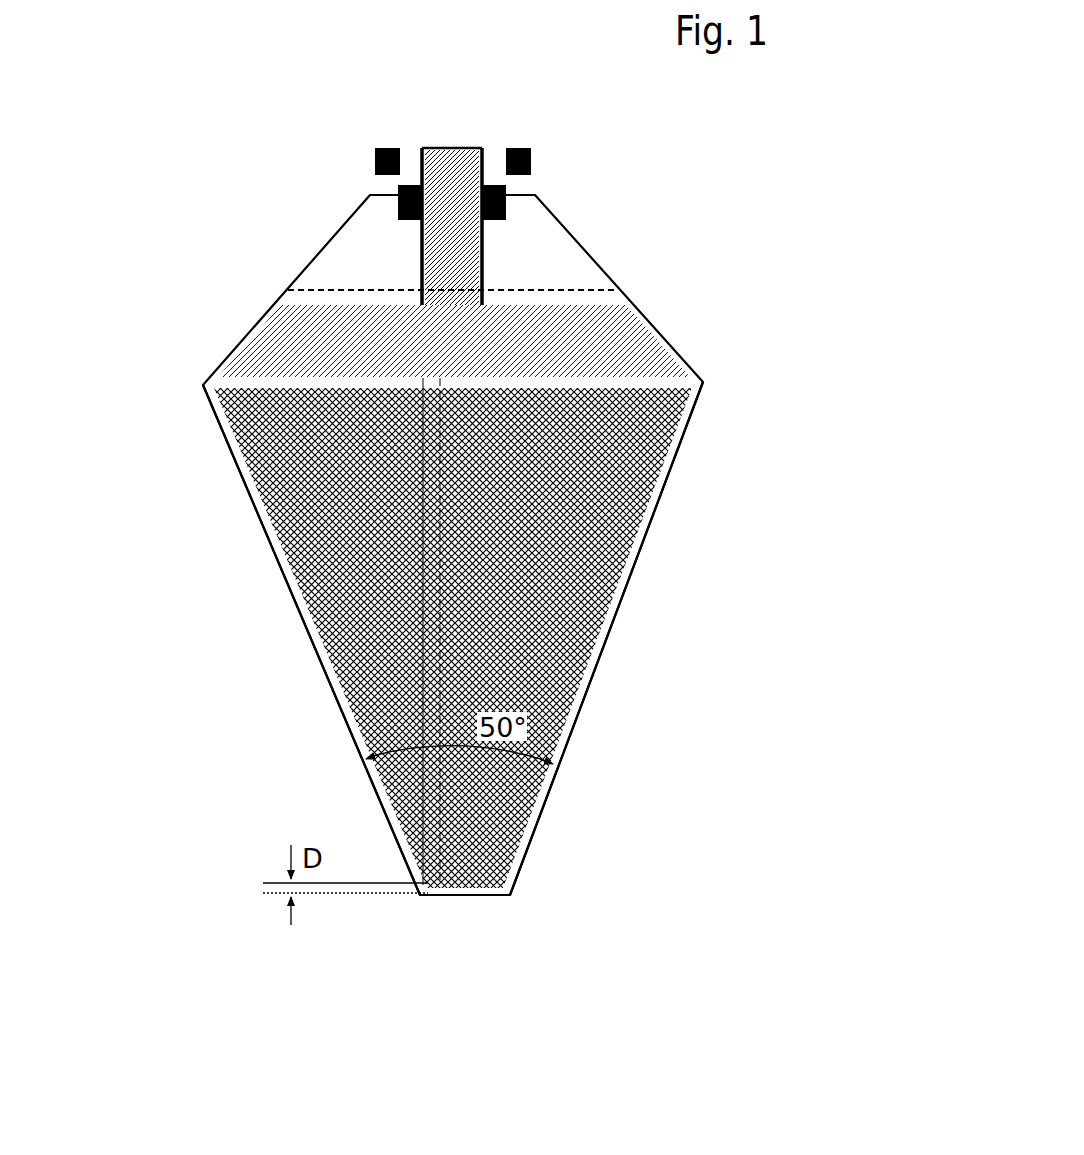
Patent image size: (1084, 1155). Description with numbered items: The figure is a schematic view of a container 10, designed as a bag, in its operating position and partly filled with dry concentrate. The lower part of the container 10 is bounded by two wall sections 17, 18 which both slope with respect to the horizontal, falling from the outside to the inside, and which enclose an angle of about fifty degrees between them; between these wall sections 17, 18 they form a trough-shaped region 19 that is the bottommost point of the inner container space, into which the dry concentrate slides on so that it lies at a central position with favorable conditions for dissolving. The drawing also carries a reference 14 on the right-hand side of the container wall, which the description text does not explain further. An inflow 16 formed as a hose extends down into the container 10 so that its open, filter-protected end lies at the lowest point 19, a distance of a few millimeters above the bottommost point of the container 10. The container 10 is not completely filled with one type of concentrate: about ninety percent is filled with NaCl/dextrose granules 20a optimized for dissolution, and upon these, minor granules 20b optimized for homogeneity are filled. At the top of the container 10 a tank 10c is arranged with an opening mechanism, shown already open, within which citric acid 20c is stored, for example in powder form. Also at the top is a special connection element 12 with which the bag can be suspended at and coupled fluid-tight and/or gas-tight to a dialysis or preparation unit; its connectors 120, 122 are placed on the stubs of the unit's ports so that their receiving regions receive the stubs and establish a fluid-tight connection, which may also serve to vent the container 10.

The container 10 is at (178, 164).
The tank 10c is at (483, 245).
The connection element 12 is at (496, 152).
The connector 120 is at (375, 163).
The connector 122 is at (530, 160).
The housing 14 is at (670, 477).
The inflow hose 16 is at (423, 433).
The wall section 17 is at (292, 596).
The wall section 18 is at (553, 787).
The trough-shaped region 19 is at (462, 898).
The NaCl/dextrose granules 20a is at (510, 665).
The minor granules 20b is at (600, 332).
The citric acid 20c is at (440, 247).